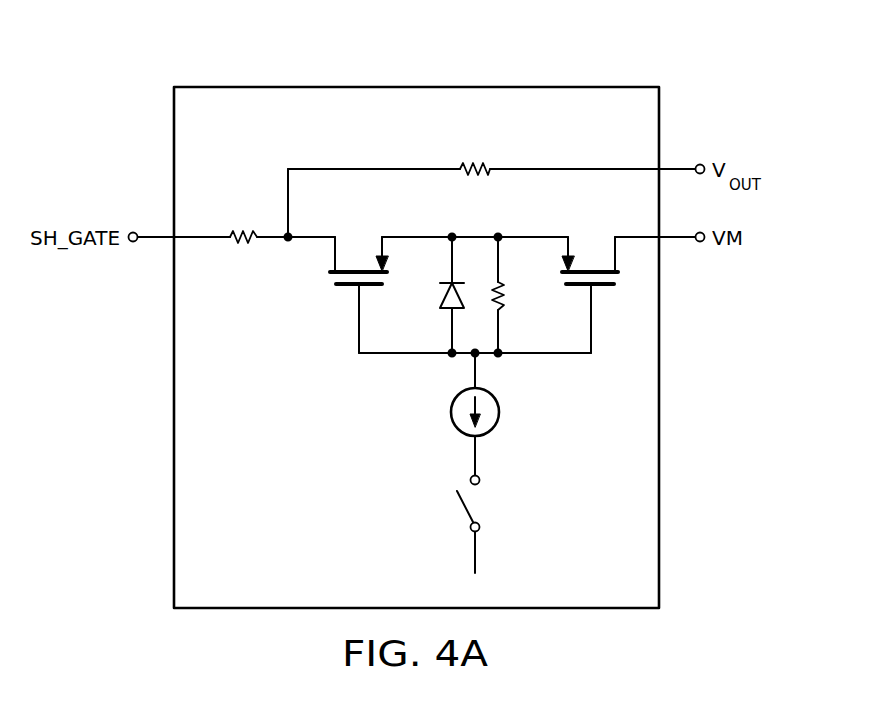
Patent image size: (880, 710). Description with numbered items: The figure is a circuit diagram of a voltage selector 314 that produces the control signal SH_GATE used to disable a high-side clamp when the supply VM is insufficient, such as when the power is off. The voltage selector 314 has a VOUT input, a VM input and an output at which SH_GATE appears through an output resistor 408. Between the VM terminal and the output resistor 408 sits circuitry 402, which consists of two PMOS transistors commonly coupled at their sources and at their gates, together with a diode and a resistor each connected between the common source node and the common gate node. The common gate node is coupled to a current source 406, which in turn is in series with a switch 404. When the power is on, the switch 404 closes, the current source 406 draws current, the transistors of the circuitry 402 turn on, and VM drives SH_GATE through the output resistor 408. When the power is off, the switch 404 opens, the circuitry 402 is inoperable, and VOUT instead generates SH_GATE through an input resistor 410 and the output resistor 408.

The voltage selector 314 is at (298, 87).
The circuitry 402 is at (336, 316).
The switch 404 is at (462, 508).
The current source 406 is at (451, 410).
The output resistor 408 is at (243, 230).
The input resistor 410 is at (478, 163).